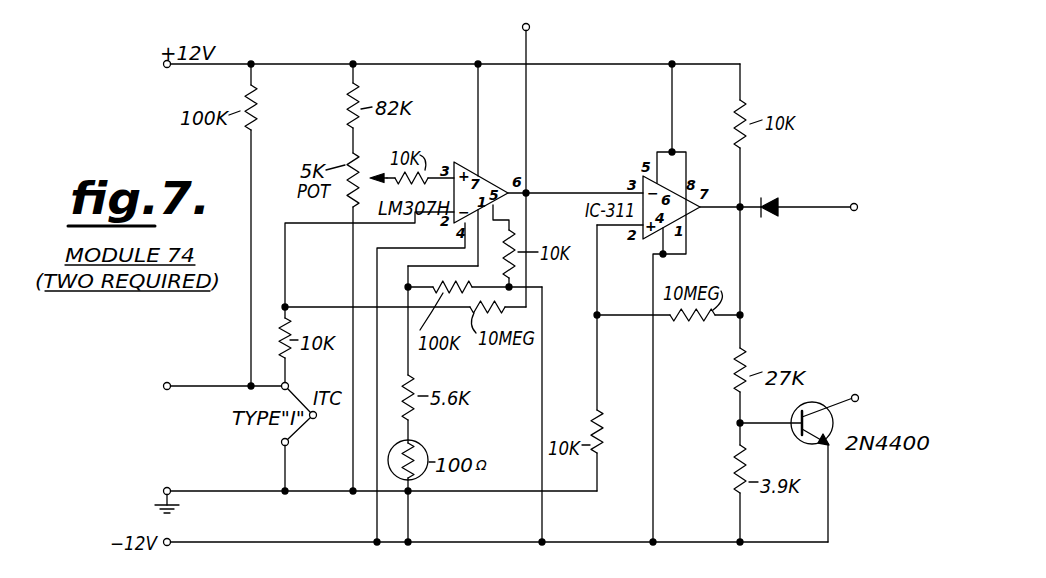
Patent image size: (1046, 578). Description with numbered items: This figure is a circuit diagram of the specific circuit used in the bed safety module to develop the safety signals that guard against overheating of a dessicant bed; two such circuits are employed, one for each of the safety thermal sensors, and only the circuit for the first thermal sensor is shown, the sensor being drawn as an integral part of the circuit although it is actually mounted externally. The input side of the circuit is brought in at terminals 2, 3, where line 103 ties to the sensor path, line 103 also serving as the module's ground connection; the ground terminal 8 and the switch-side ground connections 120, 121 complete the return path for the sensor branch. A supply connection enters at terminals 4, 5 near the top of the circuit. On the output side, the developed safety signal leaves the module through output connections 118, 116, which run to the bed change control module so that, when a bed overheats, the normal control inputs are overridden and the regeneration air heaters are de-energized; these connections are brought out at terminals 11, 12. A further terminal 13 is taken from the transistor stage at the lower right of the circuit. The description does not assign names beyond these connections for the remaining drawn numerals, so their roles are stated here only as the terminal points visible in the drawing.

The input terminal 2 is at (146, 393).
The input terminal 3 is at (146, 393).
The terminal 4 is at (526, 155).
The terminal 5 is at (526, 155).
The ground terminal 8 is at (157, 497).
The output terminal 11 is at (876, 211).
The output terminal 12 is at (876, 211).
The transistor collector terminal 13 is at (842, 403).
The ground line 103 is at (221, 366).
The output connection 116 is at (800, 207).
The output connection 118 is at (819, 209).
The switch ground line 120 is at (260, 467).
The switch ground line 121 is at (285, 471).